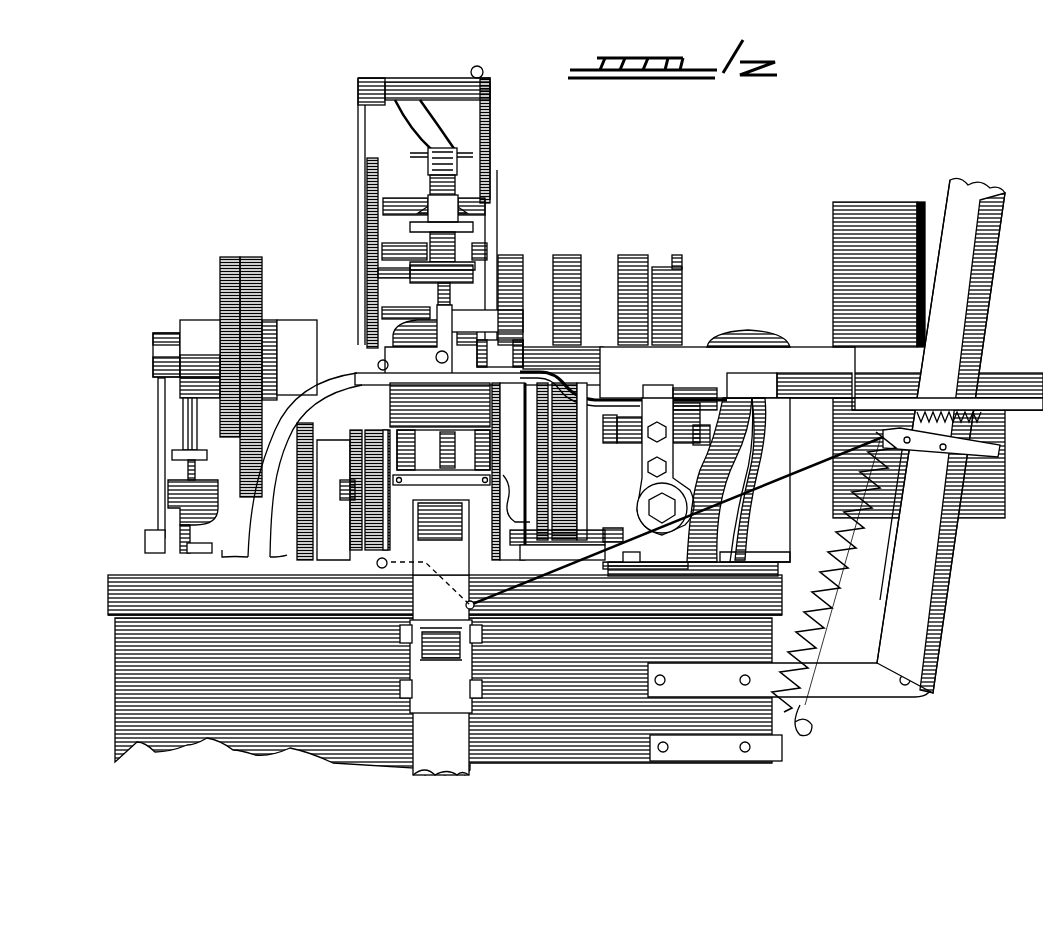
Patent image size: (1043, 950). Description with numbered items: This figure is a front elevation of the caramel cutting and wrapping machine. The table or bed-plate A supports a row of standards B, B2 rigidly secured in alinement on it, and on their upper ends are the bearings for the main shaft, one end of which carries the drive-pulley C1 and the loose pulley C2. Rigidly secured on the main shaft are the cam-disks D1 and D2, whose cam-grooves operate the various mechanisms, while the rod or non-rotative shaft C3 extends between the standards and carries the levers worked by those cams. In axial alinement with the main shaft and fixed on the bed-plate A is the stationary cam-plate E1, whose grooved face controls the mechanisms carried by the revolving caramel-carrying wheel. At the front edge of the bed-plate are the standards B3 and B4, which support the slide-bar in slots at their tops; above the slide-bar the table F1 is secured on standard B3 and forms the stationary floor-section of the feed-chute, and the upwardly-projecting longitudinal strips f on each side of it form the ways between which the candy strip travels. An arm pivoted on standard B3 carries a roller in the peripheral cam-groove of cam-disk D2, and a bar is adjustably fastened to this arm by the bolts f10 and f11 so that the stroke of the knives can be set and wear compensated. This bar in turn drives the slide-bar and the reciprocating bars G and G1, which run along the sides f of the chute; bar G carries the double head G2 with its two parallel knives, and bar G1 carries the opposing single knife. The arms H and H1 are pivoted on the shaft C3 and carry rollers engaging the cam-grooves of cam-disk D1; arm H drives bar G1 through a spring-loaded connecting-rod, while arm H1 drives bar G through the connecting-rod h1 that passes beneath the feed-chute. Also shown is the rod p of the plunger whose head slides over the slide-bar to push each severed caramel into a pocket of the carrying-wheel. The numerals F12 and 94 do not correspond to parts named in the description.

The table or bed-plate A is at (778, 593).
The standard B is at (768, 517).
The standard B2 is at (305, 333).
The standard B3 is at (720, 533).
The standard B4 is at (257, 512).
The drive-pulley C1 is at (897, 202).
The loose pulley C2 is at (937, 203).
The rod or non-rotative shaft C3 is at (599, 533).
The cam-disk D1 is at (570, 258).
The cam-disk D2 is at (682, 263).
The fixed cam-plate E1 is at (367, 217).
The table F1 is at (325, 376).
The connecting rod F12 is at (688, 510).
The reciprocating bar G is at (657, 403).
The reciprocating bar G1 is at (713, 397).
The head G2 is at (603, 390).
The arm H is at (588, 482).
The arm H1 is at (505, 480).
The longitudinal strips f is at (693, 357).
The bolt f10 is at (610, 440).
The bolt f11 is at (662, 445).
The connecting-rod h1 is at (557, 403).
The rod p is at (420, 352).
The pin 94 is at (572, 345).